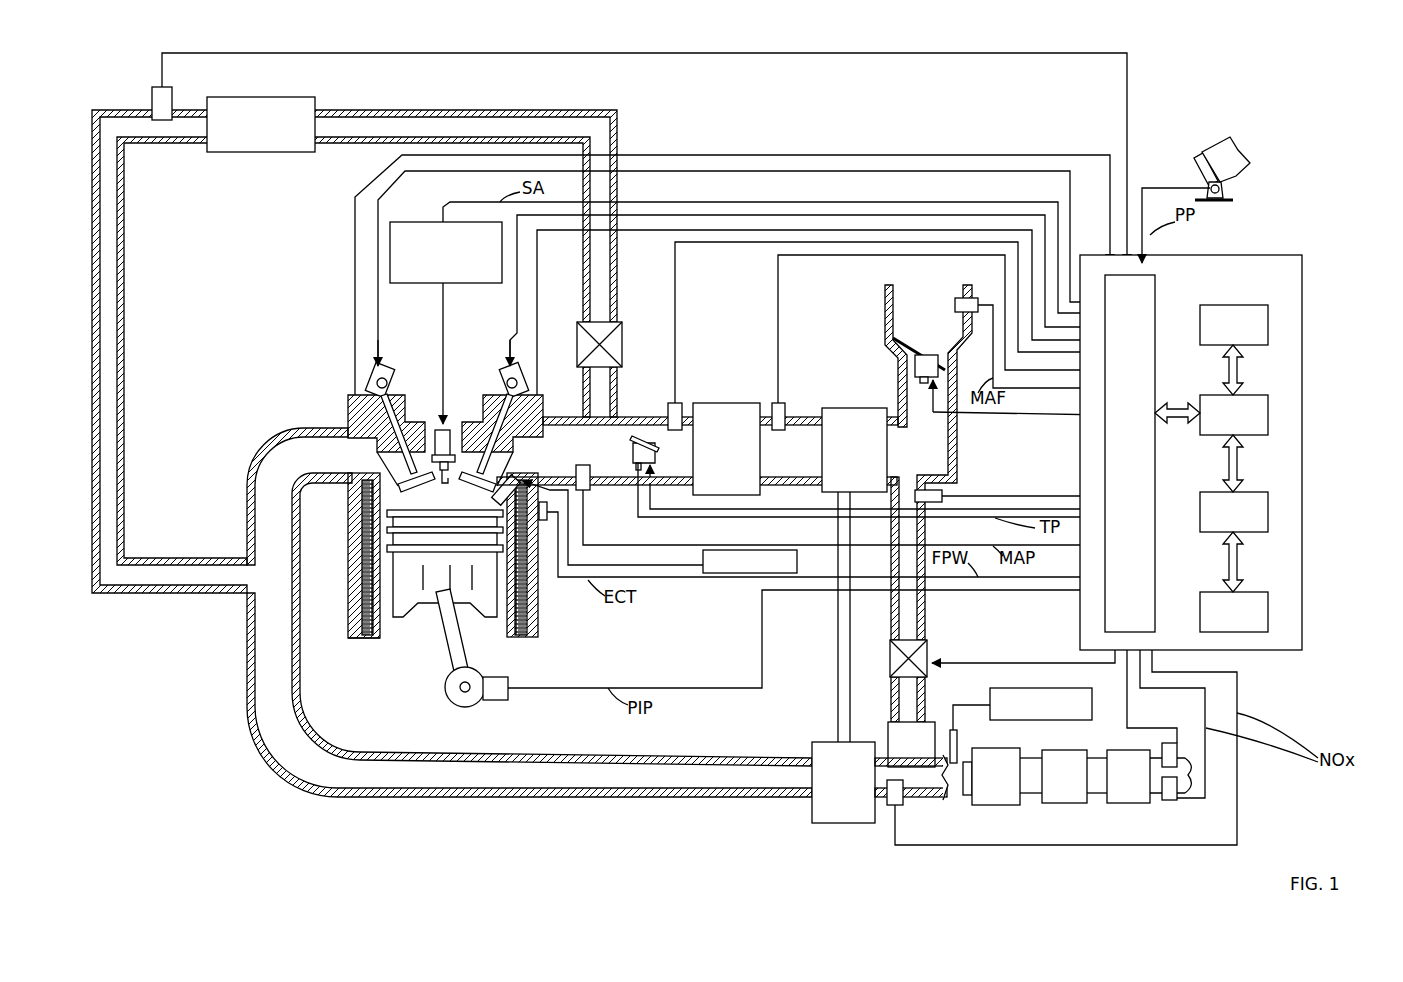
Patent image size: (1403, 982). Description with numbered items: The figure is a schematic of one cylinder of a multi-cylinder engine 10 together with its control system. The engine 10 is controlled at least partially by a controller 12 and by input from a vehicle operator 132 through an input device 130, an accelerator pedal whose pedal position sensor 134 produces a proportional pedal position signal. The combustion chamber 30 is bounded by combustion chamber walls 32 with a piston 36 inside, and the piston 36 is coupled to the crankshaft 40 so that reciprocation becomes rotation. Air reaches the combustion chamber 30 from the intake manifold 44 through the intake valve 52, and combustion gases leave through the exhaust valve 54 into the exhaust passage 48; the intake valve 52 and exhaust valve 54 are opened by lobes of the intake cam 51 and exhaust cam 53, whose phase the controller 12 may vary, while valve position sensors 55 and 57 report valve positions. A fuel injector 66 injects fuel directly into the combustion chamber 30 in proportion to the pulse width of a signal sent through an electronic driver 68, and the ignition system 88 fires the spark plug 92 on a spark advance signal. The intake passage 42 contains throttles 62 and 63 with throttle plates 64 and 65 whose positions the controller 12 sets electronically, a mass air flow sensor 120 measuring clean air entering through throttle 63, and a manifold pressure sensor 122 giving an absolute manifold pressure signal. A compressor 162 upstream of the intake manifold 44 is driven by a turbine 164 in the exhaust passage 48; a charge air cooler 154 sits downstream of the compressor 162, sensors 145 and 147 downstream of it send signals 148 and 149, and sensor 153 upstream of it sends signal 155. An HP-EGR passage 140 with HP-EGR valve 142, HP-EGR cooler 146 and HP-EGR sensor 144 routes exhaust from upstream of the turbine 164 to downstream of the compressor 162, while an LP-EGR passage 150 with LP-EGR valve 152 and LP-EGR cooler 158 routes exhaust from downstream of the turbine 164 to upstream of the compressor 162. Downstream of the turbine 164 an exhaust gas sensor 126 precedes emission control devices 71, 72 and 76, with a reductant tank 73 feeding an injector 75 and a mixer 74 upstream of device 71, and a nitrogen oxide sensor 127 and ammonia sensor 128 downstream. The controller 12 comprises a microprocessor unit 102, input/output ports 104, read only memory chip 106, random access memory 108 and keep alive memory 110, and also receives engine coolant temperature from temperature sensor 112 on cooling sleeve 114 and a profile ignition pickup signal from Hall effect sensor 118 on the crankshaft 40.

The engine 10 is at (283, 348).
The controller 12 is at (1300, 256).
The combustion chamber 30 is at (360, 592).
The combustion chamber walls 32 is at (375, 642).
The piston 36 is at (435, 600).
The crankshaft 40 is at (452, 700).
The intake passage 42 is at (928, 462).
The intake manifold 44 is at (697, 451).
The exhaust passage 48 is at (529, 612).
The intake cam 51 is at (505, 350).
The intake valve 52 is at (497, 475).
The exhaust cam 53 is at (385, 350).
The exhaust valve 54 is at (396, 472).
The valve position sensor 55 is at (525, 385).
The valve position sensor 57 is at (368, 378).
The throttle 62 is at (638, 440).
The throttle 63 is at (893, 340).
The throttle plate 64 is at (636, 450).
The throttle plate 65 is at (913, 368).
The fuel injector 66 is at (492, 492).
The electronic driver 68 is at (797, 562).
The emission control device 71 is at (996, 776).
The emission control device 72 is at (1064, 776).
The reductant tank 73 is at (1041, 704).
The mixer 74 is at (970, 805).
The injector 75 is at (960, 745).
The emission control device 76 is at (1128, 776).
The ignition system 88 is at (410, 222).
The spark plug 92 is at (448, 430).
The microprocessor unit 102 is at (1270, 412).
The input/output ports 104 is at (1160, 282).
The read only memory chip 106 is at (1270, 320).
The random access memory 108 is at (1270, 512).
The keep alive memory 110 is at (1270, 612).
The temperature sensor 112 is at (545, 522).
The cooling sleeve 114 is at (535, 622).
The Hall effect sensor 118 is at (500, 700).
The mass air flow sensor 120 is at (962, 298).
The manifold pressure sensor 122 is at (576, 470).
The exhaust gas sensor 126 is at (906, 806).
The NOx sensor 127 is at (1172, 800).
The ammonia sensor 128 is at (1172, 742).
The input device 130 is at (1195, 162).
The vehicle operator 132 is at (1243, 150).
The pedal position sensor 134 is at (1223, 190).
The HP-EGR passage 140 is at (530, 110).
The HP-EGR valve 142 is at (622, 340).
The HP-EGR sensor 144 is at (152, 90).
The sensor 145 is at (785, 405).
The HP-EGR cooler 146 is at (261, 124).
The sensor 147 is at (682, 405).
The signal 148 is at (778, 318).
The signal 149 is at (675, 318).
The LP-EGR passage 150 is at (925, 605).
The LP-EGR valve 152 is at (890, 665).
The sensor 153 is at (920, 488).
The charge air cooler 154 is at (726, 449).
The signal 155 is at (988, 496).
The LP-EGR cooler 158 is at (911, 744).
The compressor 162 is at (854, 575).
The turbine 164 is at (843, 782).